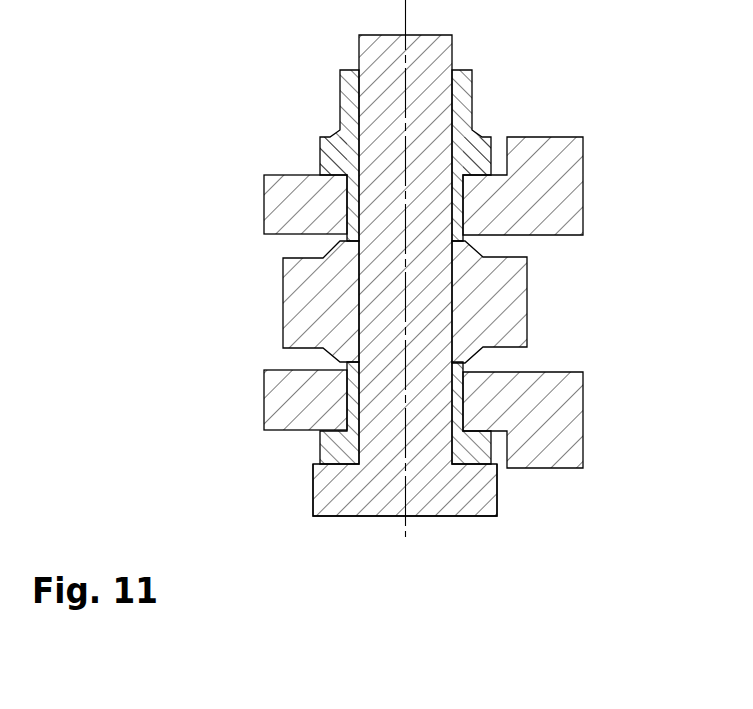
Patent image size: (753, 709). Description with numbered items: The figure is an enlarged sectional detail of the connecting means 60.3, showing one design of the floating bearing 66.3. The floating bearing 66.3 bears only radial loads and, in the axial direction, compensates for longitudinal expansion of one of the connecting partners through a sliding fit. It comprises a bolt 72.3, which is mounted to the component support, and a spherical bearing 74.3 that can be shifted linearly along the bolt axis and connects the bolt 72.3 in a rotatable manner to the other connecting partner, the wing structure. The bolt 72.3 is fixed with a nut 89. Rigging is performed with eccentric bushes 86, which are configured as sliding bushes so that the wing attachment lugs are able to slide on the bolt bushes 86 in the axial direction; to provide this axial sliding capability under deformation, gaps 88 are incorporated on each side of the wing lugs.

The connecting means 60.3 is at (443, 542).
The floating bearing 66.3 is at (347, 552).
The bolt 72.3 is at (493, 511).
The spherical bearing 74.3 is at (458, 302).
The bushes 86 is at (320, 150).
The gaps 88 is at (345, 178).
The nut 89 is at (453, 98).